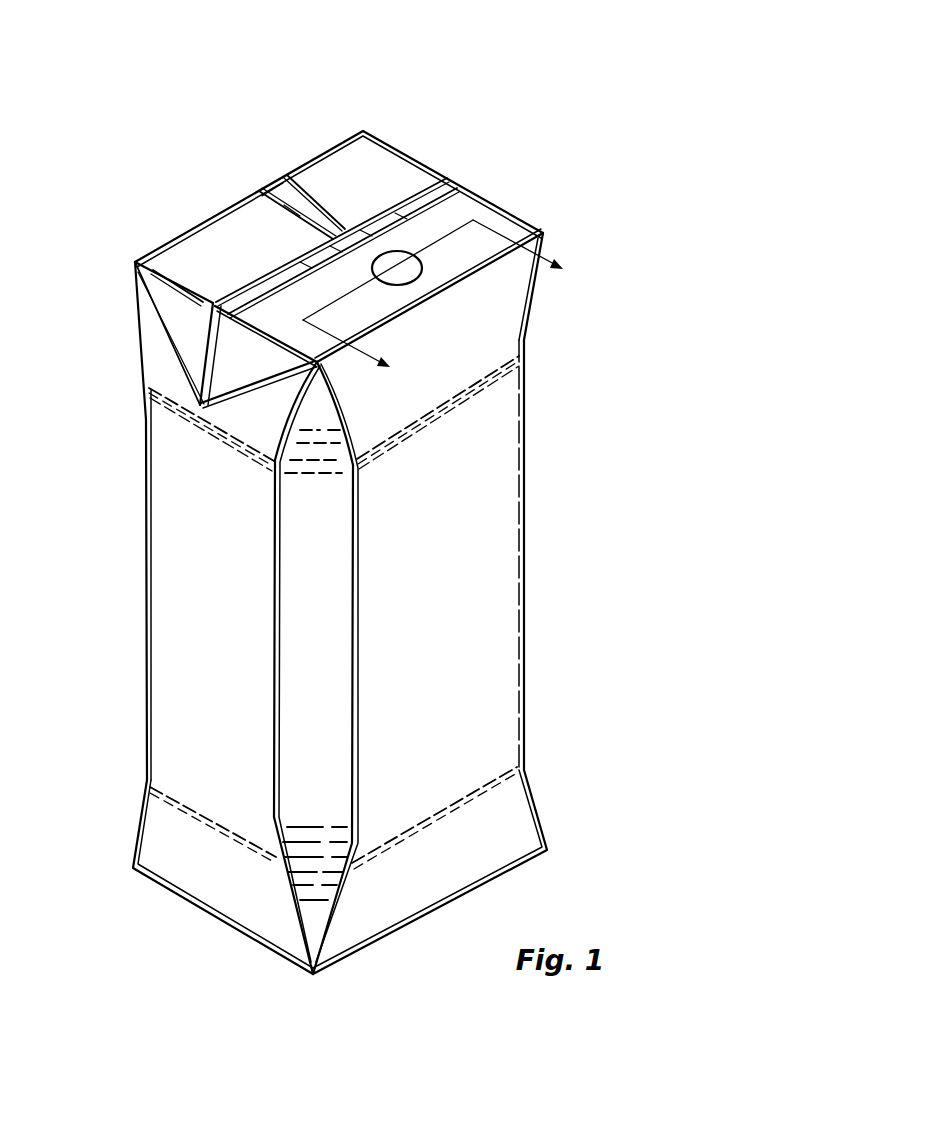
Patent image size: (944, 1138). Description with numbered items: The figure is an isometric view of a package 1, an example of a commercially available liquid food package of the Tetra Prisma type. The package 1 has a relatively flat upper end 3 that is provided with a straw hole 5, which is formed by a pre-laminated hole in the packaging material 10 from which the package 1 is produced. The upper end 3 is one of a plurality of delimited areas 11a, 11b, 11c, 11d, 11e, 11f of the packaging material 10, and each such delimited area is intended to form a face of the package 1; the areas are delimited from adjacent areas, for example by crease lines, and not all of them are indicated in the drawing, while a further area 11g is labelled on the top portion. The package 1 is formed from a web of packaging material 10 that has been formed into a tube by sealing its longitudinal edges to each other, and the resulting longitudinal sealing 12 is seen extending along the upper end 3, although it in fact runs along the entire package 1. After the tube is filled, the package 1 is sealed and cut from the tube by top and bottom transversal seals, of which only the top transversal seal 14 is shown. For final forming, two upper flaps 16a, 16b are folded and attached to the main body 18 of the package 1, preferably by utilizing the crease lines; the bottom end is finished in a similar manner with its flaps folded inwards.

The package 1 is at (294, 113).
The upper end 3 is at (443, 220).
The straw hole 5 is at (405, 272).
The packaging material 10 is at (185, 580).
The delimited area 11a is at (207, 870).
The delimited area 11b is at (410, 890).
The delimited area 11c is at (202, 728).
The delimited area 11d is at (487, 512).
The delimited area 11e is at (500, 333).
The delimited area 11f is at (257, 428).
The top panel region 11g is at (287, 307).
The longitudinal sealing 12 is at (293, 220).
The top transversal seal 14 is at (340, 195).
The upper flap 16a is at (180, 317).
The upper flap 16b is at (536, 201).
The main body 18 is at (493, 600).